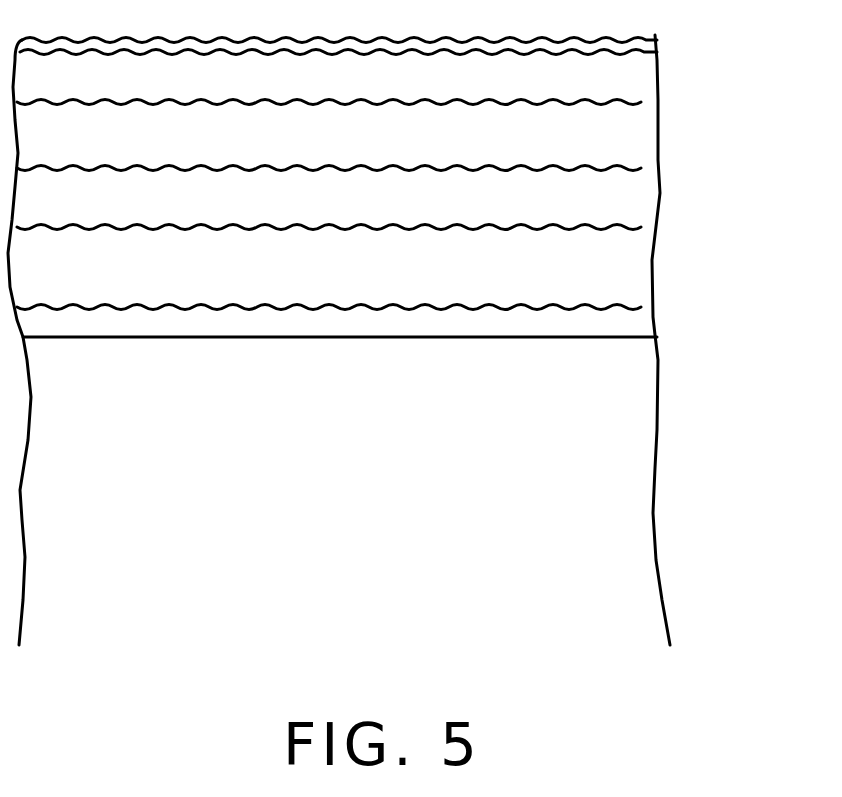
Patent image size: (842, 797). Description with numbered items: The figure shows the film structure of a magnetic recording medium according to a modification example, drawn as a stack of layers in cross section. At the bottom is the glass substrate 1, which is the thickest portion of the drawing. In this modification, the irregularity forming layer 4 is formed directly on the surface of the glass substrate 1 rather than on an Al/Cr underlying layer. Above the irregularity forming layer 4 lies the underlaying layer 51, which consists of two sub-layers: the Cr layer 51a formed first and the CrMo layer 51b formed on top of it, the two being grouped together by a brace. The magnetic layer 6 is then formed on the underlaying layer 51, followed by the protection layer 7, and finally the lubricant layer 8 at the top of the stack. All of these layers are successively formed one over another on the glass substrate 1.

The glass substrate 1 is at (635, 468).
The irregularity forming layer 4 is at (643, 317).
The underlaying layer 51 is at (413, 241).
The Cr layer 51a is at (635, 259).
The CrMo layer 51b is at (638, 193).
The magnetic layer 6 is at (640, 135).
The protection layer 7 is at (640, 80).
The lubricant layer 8 is at (656, 39).